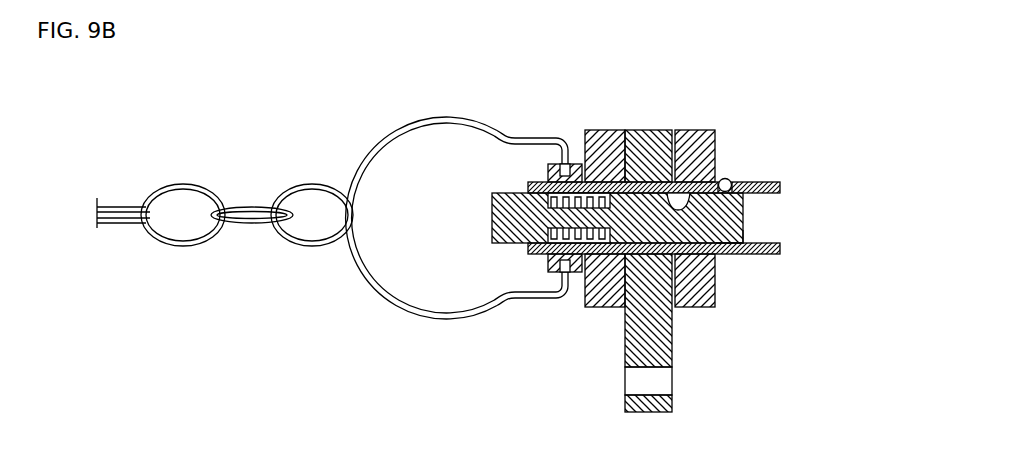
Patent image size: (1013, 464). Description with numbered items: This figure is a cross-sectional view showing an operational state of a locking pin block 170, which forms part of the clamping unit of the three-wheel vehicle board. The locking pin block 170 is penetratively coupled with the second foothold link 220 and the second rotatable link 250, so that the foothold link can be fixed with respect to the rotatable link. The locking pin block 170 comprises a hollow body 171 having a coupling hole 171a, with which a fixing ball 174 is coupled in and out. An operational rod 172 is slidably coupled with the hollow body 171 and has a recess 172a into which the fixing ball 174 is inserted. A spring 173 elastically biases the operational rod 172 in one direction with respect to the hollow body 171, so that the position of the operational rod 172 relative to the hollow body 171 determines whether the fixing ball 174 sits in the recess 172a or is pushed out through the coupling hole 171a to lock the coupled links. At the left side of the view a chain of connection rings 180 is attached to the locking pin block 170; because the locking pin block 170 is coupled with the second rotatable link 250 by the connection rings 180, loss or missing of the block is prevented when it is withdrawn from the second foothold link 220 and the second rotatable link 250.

The locking pin block 170 is at (440, 252).
The hollow body 171 is at (780, 189).
The coupling hole 171a is at (742, 186).
The operational rod 172 is at (743, 218).
The recess 172a is at (737, 255).
The spring 173 is at (577, 266).
The fixing ball 174 is at (731, 178).
The connection ring 180 is at (312, 186).
The second foothold link 220 is at (602, 130).
The second rotatable link 250 is at (663, 347).